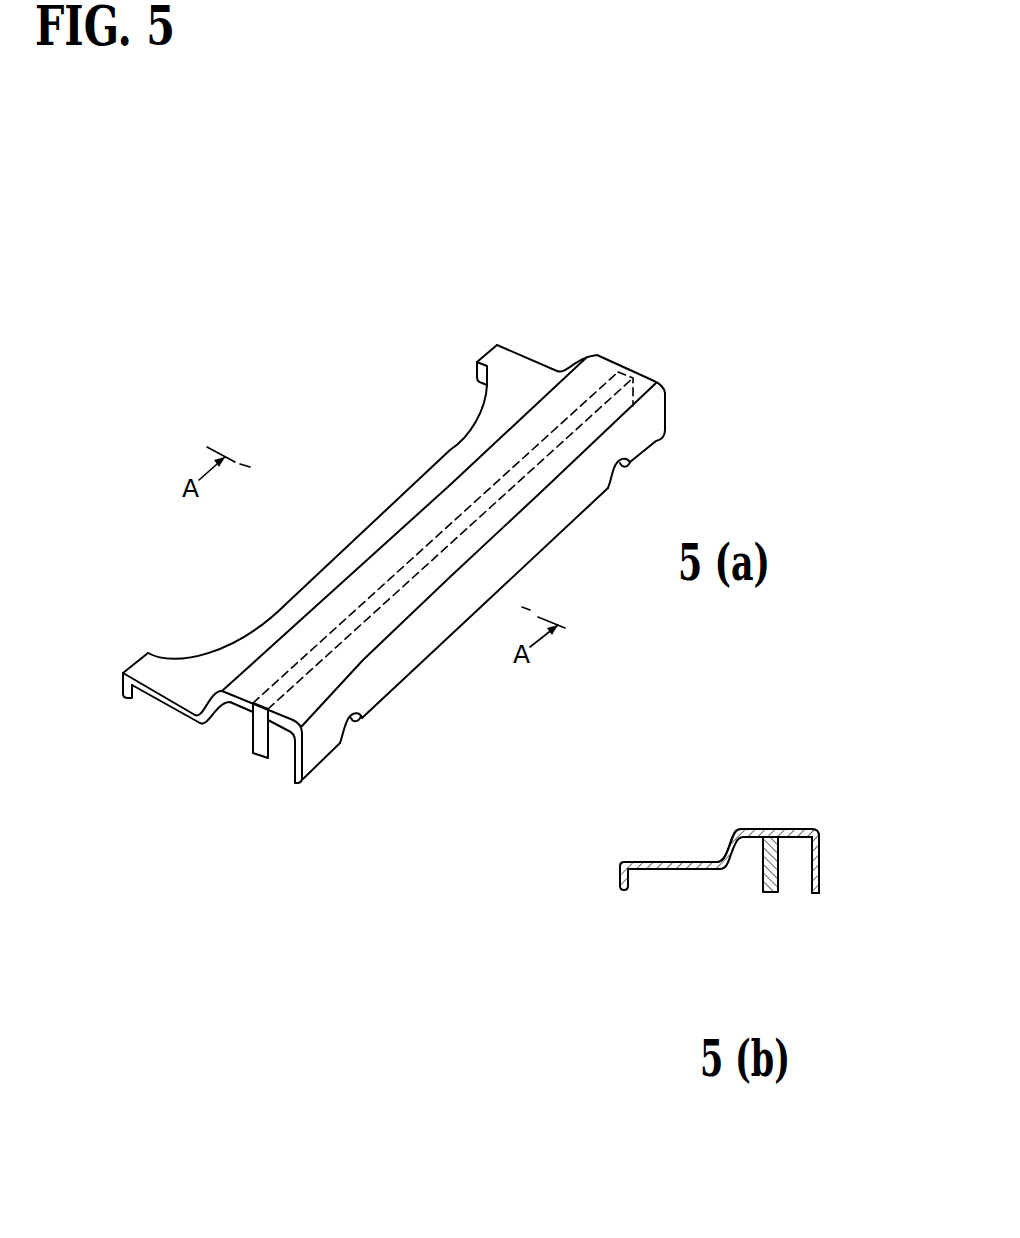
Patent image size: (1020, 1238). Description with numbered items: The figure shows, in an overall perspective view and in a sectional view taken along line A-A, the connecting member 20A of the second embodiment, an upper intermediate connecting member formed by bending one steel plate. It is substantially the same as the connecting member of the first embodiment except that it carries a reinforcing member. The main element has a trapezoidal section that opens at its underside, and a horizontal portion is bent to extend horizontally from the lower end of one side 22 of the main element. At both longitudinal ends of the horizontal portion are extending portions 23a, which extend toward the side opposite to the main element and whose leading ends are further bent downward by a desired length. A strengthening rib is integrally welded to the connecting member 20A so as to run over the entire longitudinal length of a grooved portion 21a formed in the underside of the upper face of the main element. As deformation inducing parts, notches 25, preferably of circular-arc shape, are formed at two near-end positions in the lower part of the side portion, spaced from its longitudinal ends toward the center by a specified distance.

The connecting member 20A is at (376, 497).
The grooved portion 21a is at (800, 868).
The side of the main element 22 is at (727, 840).
The extending portions 23a is at (498, 362).
The notches 25 is at (632, 465).